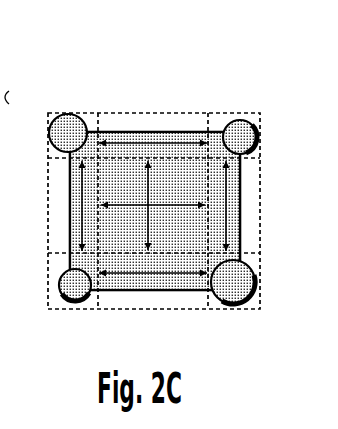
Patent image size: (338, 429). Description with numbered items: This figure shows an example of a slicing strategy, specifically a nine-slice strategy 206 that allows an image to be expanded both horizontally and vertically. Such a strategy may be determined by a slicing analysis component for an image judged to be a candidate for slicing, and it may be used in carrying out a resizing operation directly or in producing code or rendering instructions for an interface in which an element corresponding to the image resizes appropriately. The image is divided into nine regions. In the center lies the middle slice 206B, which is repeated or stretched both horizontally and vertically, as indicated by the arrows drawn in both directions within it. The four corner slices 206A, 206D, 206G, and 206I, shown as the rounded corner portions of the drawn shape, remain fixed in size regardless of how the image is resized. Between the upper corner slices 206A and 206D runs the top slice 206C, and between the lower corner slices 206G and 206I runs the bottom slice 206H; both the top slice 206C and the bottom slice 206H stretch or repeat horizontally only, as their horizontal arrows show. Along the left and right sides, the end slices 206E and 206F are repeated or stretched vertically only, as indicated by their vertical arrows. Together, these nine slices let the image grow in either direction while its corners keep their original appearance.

The nine-slice strategy 206 is at (125, 59).
The corner slice 206A is at (53, 112).
The middle slice 206B is at (195, 190).
The top slice 206C is at (148, 121).
The corner slice 206D is at (217, 121).
The end slice 206E is at (57, 182).
The end slice 206F is at (245, 218).
The corner slice 206G is at (58, 300).
The bottom slice 206H is at (155, 300).
The corner slice 206I is at (235, 307).